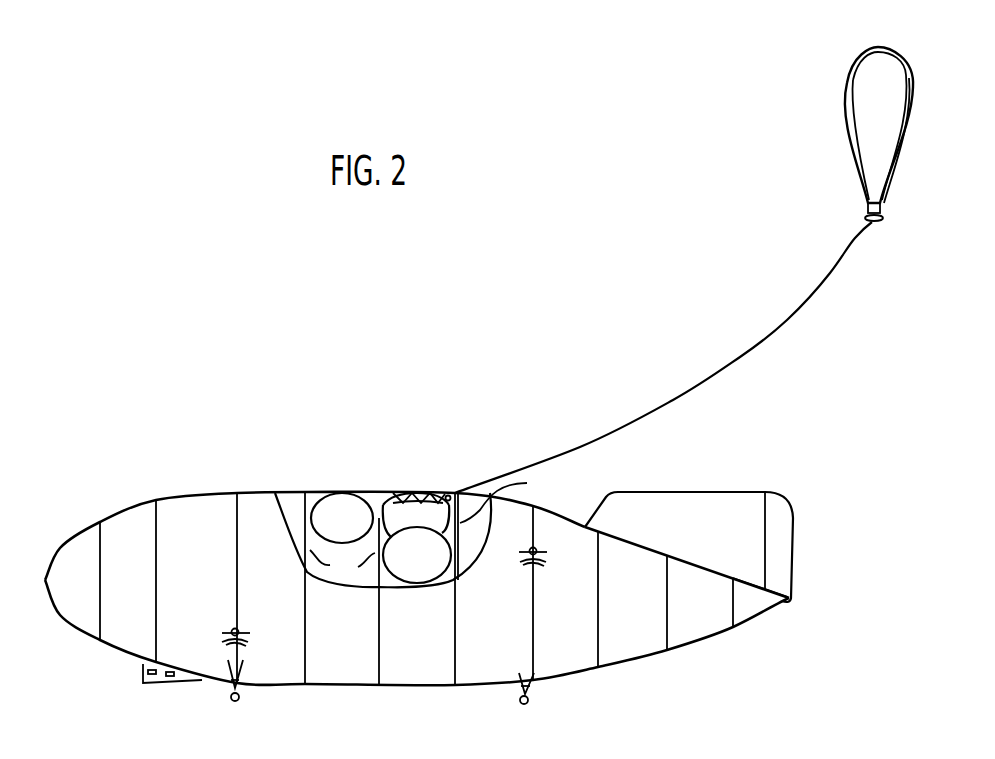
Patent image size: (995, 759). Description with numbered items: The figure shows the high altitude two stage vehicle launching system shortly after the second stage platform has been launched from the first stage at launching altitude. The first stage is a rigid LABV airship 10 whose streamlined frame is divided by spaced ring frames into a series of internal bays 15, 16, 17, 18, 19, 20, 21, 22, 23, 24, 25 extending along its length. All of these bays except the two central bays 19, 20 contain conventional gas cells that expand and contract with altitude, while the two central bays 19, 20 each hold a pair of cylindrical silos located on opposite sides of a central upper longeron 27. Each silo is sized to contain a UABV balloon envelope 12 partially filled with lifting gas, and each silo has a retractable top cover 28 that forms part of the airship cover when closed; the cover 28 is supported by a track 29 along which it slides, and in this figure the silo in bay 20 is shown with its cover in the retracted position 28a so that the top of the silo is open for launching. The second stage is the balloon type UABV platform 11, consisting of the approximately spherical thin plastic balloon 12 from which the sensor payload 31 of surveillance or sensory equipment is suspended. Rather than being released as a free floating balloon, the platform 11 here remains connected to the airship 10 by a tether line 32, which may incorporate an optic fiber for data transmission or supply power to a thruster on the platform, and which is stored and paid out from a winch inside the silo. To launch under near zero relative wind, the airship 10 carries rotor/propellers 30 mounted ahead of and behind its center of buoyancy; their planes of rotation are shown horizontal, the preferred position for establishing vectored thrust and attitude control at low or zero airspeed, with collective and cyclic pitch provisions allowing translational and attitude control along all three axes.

The first stage LABV airship 10 is at (203, 488).
The UABV platform 11 is at (857, 152).
The balloon envelope 12 is at (865, 88).
The internal bay 15 is at (87, 598).
The internal bay 16 is at (135, 598).
The internal bay 17 is at (205, 598).
The internal bay 18 is at (280, 598).
The central bay 19 is at (350, 630).
The central bay 20 is at (423, 658).
The internal bay 21 is at (497, 611).
The internal bay 22 is at (573, 616).
The internal bay 23 is at (642, 610).
The internal bay 24 is at (710, 606).
The internal bay 25 is at (763, 605).
The central upper longeron 27 is at (418, 490).
The retractable top cover 28 is at (337, 505).
The retracted position 28a is at (412, 560).
The track 29 is at (433, 526).
The rotor/propeller 30 is at (243, 622).
The sensor payload 31 is at (875, 223).
The tether line 32 is at (673, 398).